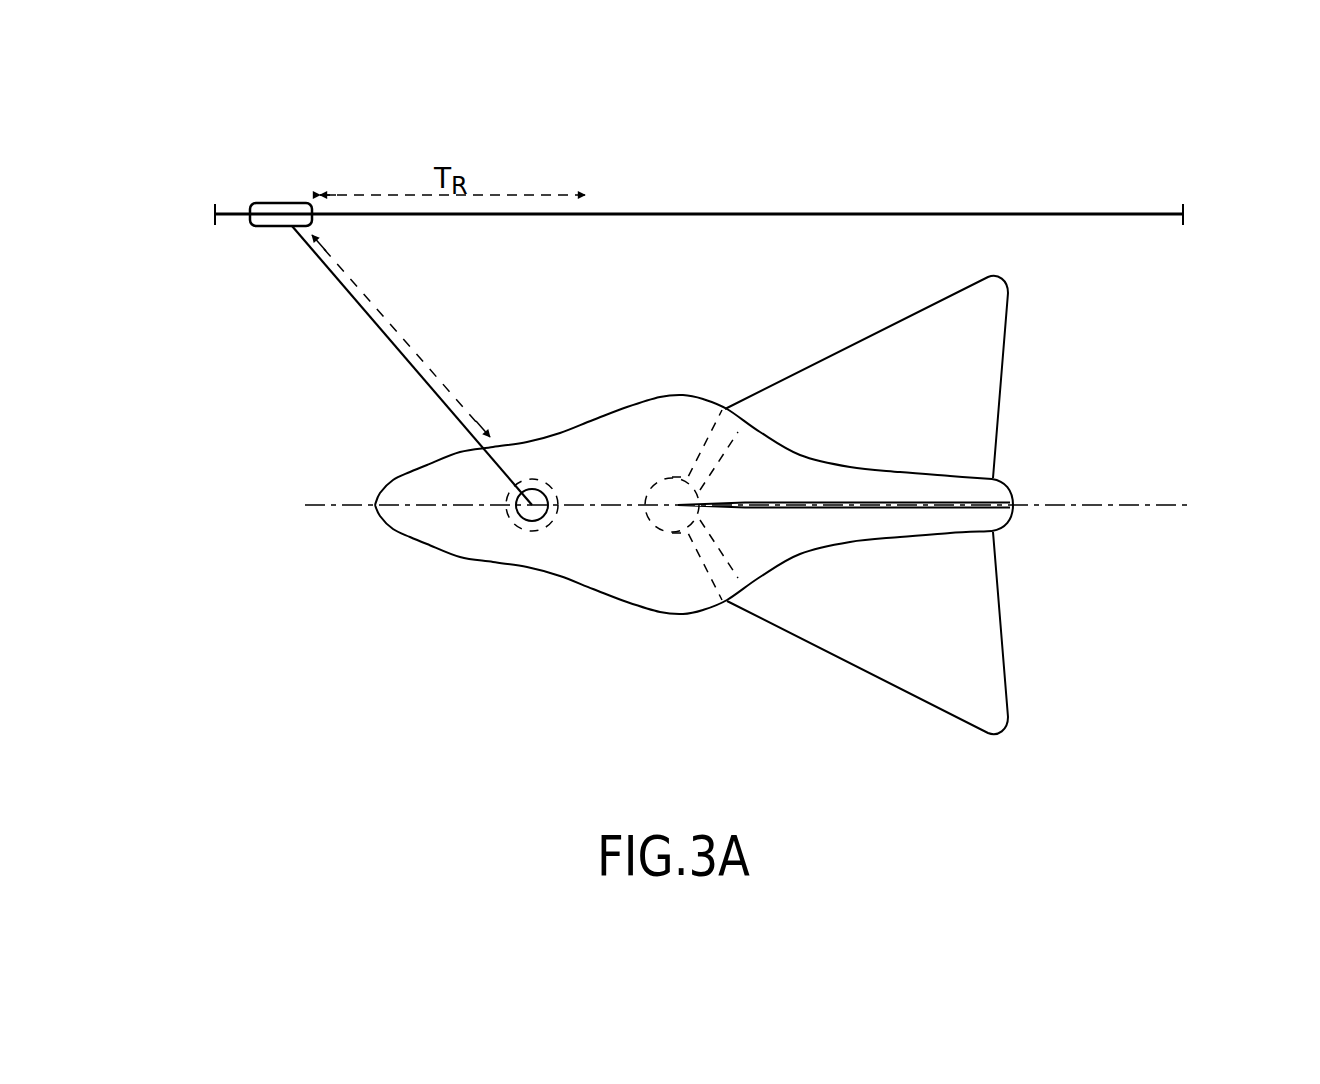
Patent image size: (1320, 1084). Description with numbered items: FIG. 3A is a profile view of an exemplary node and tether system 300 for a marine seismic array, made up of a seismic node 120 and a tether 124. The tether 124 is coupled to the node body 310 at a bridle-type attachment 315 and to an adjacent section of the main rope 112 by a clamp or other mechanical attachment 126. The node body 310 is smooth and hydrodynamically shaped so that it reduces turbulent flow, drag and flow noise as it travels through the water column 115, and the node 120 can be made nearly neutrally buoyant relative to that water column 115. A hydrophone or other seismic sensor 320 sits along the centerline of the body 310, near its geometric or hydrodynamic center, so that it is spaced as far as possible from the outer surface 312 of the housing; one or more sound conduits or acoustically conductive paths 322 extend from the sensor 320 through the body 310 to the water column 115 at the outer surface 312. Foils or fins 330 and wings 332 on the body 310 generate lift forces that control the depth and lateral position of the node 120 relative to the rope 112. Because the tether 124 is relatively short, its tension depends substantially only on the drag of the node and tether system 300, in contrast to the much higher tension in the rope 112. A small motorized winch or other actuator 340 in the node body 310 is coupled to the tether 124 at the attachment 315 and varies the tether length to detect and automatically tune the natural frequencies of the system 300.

The rope 112 is at (1079, 213).
The water column 115 is at (364, 643).
The seismic node 120 is at (404, 442).
The tether 124 is at (443, 385).
The clamp 126 is at (275, 203).
The node and tether system 300 is at (273, 310).
The node body 310 is at (625, 578).
The outer surface 312 is at (669, 626).
The attachment 315 is at (514, 514).
The seismic sensor 320 is at (663, 478).
The sound conduits 322 is at (727, 427).
The fins 330 is at (988, 344).
The wings 332 is at (843, 508).
The actuator 340 is at (514, 529).